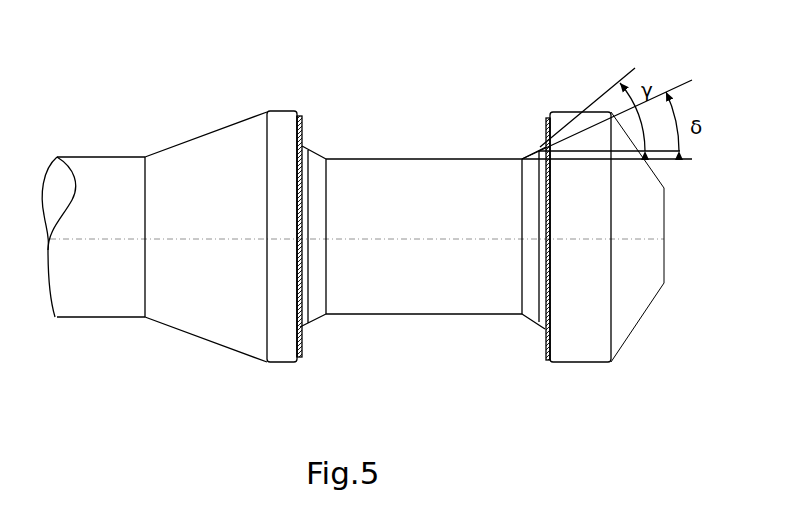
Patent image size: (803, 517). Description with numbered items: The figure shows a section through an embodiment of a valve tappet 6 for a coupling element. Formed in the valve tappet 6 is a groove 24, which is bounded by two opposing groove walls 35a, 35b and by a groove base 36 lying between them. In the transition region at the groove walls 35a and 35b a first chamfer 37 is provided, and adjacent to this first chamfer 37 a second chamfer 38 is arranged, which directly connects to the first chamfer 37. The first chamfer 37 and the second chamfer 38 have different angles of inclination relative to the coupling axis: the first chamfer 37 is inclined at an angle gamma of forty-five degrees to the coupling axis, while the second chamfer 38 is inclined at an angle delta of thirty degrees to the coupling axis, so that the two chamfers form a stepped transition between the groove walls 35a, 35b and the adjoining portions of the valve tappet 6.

The valve tappet 6 is at (128, 205).
The groove 24 is at (452, 118).
The groove wall 35a is at (548, 140).
The groove wall 35b is at (303, 125).
The groove base 36 is at (405, 316).
The first chamfer 37 is at (310, 145).
The second chamfer 38 is at (315, 319).